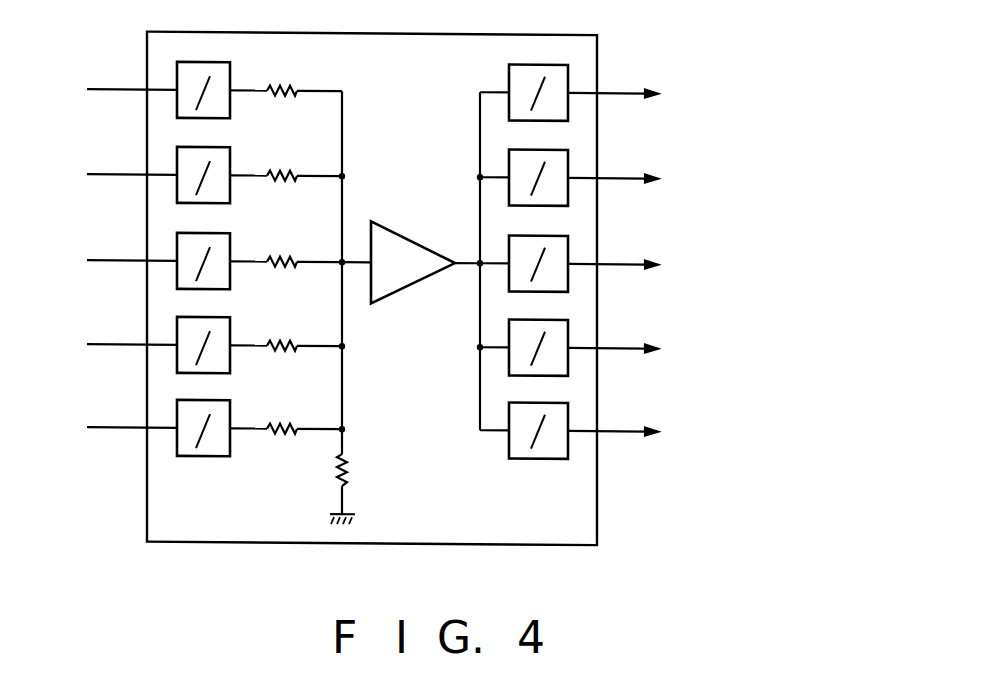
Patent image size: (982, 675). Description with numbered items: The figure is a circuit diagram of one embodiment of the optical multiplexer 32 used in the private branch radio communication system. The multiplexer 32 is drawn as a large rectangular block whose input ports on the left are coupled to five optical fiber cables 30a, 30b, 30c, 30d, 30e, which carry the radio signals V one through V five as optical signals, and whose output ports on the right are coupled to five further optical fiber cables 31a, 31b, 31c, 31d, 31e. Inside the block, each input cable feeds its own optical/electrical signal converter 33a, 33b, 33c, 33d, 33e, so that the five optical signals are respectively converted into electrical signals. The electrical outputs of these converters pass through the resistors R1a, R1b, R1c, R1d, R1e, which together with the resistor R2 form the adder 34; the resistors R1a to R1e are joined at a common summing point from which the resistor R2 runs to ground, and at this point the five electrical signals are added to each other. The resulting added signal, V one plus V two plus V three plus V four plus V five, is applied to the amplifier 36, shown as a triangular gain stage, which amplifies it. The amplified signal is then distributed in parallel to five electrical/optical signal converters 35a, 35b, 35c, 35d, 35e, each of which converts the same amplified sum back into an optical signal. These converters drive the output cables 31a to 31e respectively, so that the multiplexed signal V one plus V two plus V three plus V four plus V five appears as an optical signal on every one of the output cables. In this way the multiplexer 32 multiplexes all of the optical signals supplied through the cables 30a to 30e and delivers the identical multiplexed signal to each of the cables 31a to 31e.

The optical multiplexer 32 is at (507, 33).
The optical fiber cable 30a is at (105, 429).
The optical fiber cable 30b is at (105, 346).
The optical fiber cable 30c is at (105, 262).
The optical fiber cable 30d is at (105, 176).
The optical fiber cable 30e is at (105, 91).
The optical/electrical signal converter 33a is at (231, 438).
The optical/electrical signal converter 33b is at (231, 355).
The optical/electrical signal converter 33c is at (231, 271).
The optical/electrical signal converter 33d is at (231, 185).
The optical/electrical signal converter 33e is at (231, 100).
The resistor R1a is at (280, 421).
The resistor R1b is at (280, 334).
The resistor R1c is at (280, 253).
The resistor R1d is at (280, 170).
The resistor R1e is at (268, 85).
The adder 34 is at (358, 159).
The resistor R2 is at (346, 467).
The amplifier 36 is at (418, 283).
The electrical/optical signal converter 35a is at (530, 50).
The electrical/optical signal converter 35b is at (530, 135).
The electrical/optical signal converter 35c is at (522, 233).
The electrical/optical signal converter 35d is at (530, 305).
The electrical/optical signal converter 35e is at (530, 388).
The optical fiber cable 31a is at (624, 90).
The optical fiber cable 31b is at (624, 175).
The optical fiber cable 31c is at (621, 233).
The optical fiber cable 31d is at (624, 345).
The optical fiber cable 31e is at (624, 428).